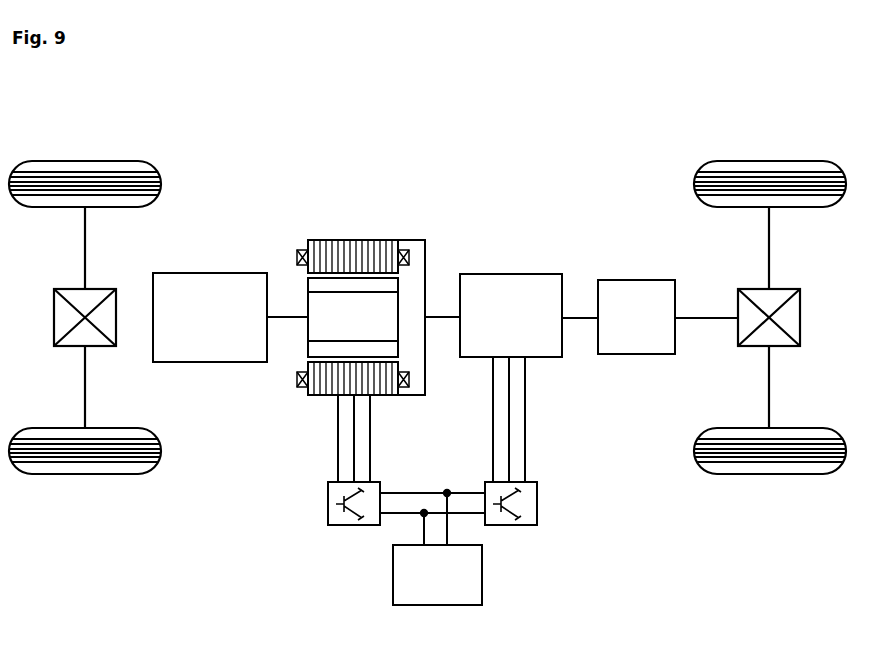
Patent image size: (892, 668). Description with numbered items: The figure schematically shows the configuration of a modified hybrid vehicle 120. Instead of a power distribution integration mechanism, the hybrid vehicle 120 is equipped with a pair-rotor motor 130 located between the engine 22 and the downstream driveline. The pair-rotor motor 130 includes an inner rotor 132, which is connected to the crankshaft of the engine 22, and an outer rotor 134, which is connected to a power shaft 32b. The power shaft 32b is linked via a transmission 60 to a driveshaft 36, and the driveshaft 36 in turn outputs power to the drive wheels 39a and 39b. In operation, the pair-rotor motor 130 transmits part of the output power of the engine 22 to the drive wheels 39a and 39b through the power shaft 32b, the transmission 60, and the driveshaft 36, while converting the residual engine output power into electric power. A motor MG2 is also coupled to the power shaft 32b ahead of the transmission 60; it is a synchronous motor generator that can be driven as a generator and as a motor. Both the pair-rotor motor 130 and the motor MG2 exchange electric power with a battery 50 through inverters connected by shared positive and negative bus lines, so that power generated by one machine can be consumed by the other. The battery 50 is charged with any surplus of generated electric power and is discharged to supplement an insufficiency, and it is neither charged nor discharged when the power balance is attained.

The engine 22 is at (211, 362).
The hybrid vehicle 120 is at (462, 164).
The pair-rotor motor 130 is at (297, 177).
The inner rotor 132 is at (308, 302).
The outer rotor 134 is at (352, 240).
The power shaft 32b is at (447, 318).
The motor MG2 is at (510, 274).
The transmission 60 is at (637, 354).
The driveshaft 36 is at (688, 322).
The drive wheel 39a is at (768, 161).
The drive wheel 39b is at (768, 474).
The battery 50 is at (482, 573).